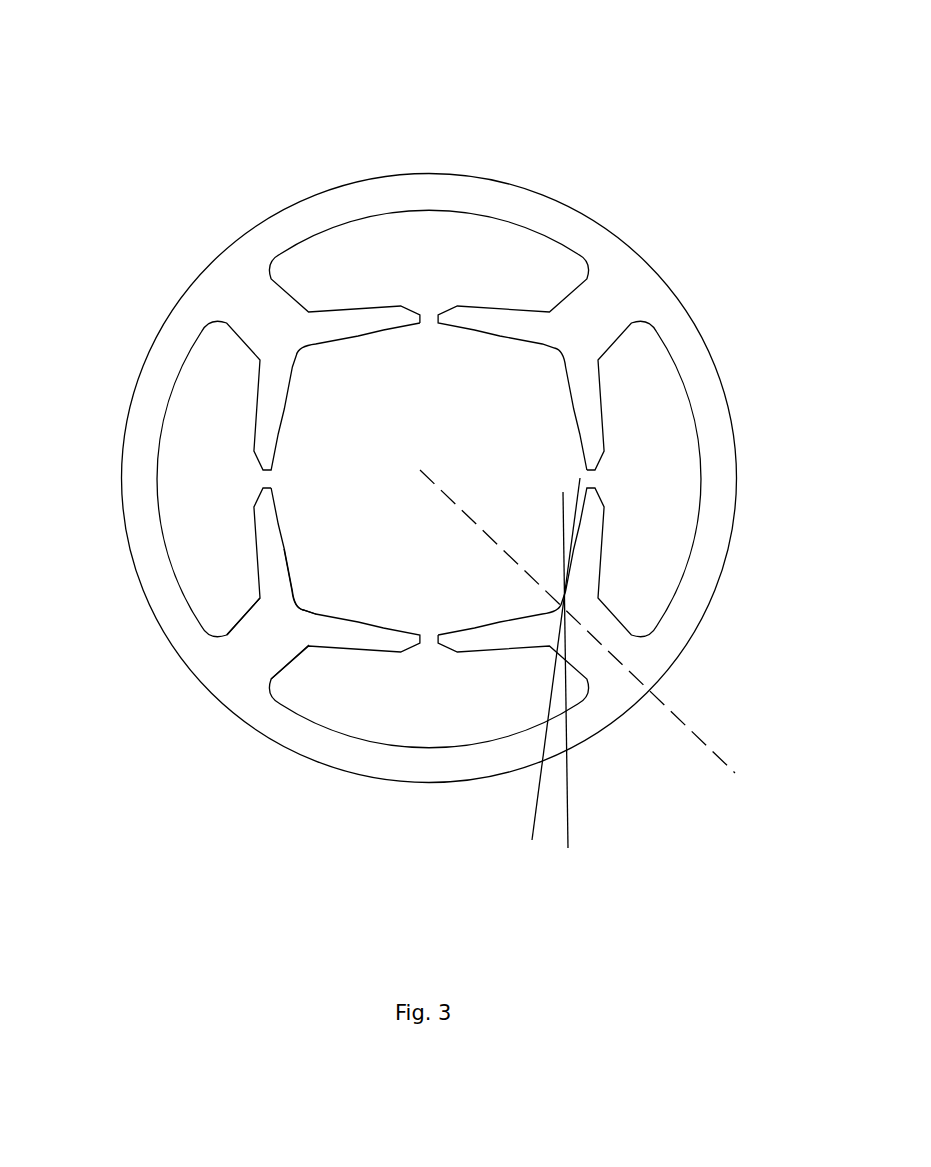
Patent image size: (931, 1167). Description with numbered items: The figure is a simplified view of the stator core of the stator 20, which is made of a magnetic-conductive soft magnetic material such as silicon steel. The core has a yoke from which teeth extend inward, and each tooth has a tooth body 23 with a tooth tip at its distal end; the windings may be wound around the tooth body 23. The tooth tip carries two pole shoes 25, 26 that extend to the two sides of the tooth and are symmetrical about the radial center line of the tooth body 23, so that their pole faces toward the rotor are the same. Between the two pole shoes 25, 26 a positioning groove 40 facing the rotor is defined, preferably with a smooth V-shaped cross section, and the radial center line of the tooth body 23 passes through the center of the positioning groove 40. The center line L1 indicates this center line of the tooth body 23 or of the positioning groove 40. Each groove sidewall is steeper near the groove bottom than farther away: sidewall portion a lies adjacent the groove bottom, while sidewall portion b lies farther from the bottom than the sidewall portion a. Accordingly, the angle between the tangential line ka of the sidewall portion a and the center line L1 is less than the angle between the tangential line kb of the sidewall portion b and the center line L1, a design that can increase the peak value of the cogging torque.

The stator 20 is at (419, 50).
The tooth body 23 is at (258, 627).
The pole shoe 25 is at (270, 537).
The pole shoe 26 is at (362, 635).
The positioning groove 40 is at (307, 605).
The sidewall portion a is at (565, 590).
The sidewall portion b is at (568, 558).
The tangential line ka is at (584, 689).
The tangential line kb is at (535, 677).
The center line L1 is at (585, 652).